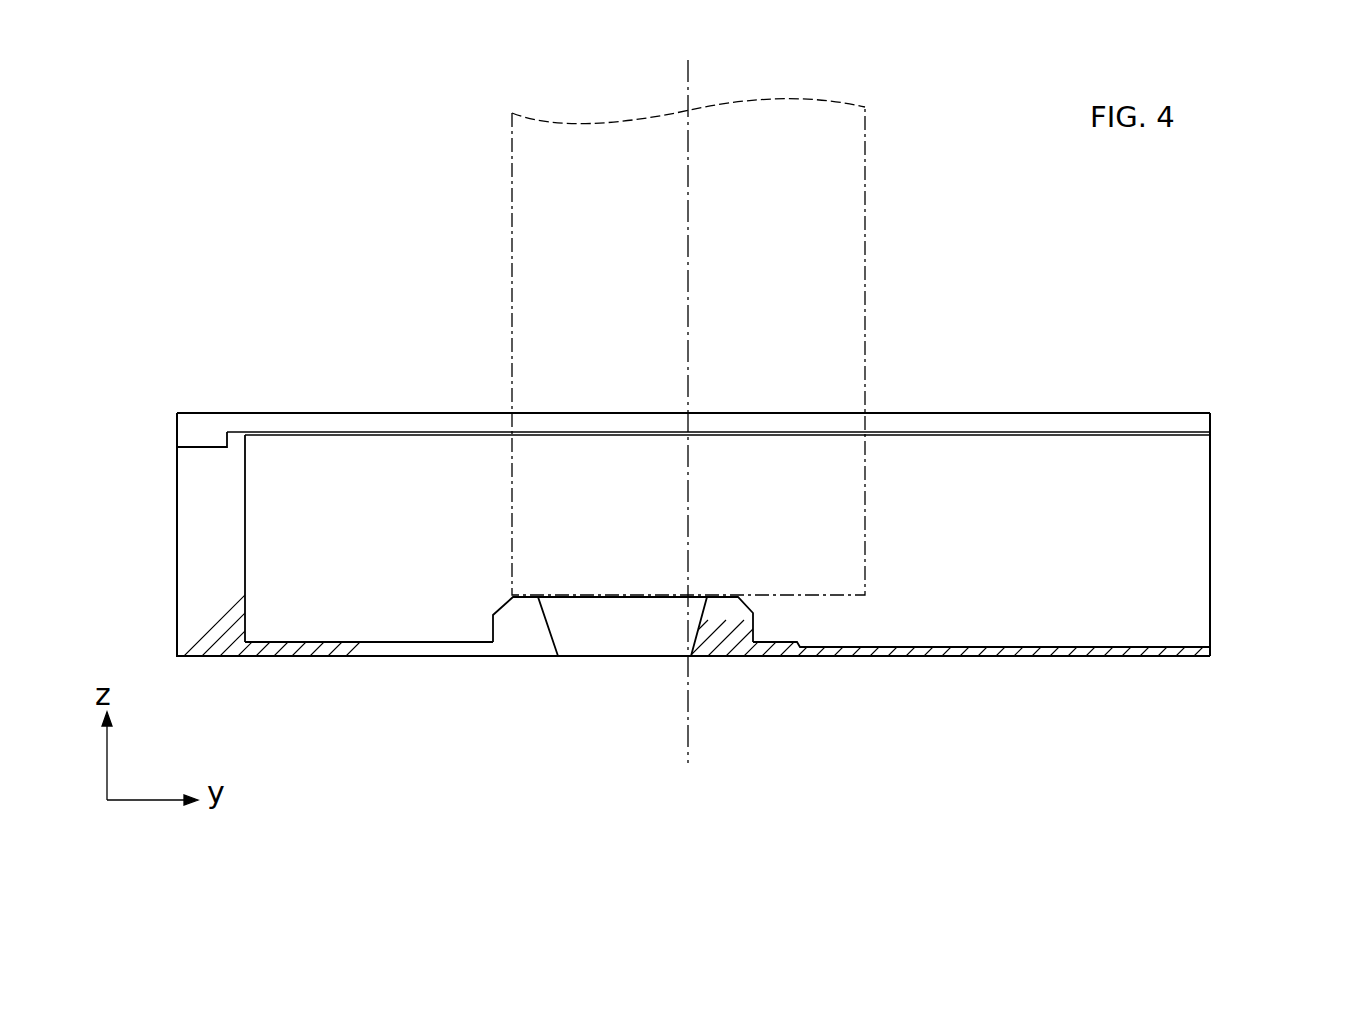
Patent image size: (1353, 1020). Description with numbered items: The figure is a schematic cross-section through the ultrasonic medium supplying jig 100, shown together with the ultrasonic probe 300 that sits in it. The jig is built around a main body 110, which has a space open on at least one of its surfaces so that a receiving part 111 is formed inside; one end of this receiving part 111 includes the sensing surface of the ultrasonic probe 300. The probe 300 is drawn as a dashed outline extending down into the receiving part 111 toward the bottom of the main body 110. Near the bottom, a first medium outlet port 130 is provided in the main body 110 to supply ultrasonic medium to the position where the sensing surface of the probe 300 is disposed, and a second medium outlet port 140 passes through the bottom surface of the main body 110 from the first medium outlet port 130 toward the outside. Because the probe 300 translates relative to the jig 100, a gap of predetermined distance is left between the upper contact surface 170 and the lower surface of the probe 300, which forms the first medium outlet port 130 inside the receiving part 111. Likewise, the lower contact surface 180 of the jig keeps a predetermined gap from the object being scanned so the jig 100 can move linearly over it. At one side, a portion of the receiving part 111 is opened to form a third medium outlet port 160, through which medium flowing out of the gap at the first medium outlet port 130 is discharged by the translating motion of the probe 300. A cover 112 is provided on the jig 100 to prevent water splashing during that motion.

The ultrasonic medium supplying jig 100 is at (265, 366).
The main body 110 is at (212, 610).
The receiving part 111 is at (947, 467).
The cover 112 is at (383, 431).
The first medium outlet port 130 is at (612, 600).
The second medium outlet port 140 is at (612, 657).
The third medium outlet port 160 is at (1212, 532).
The upper contact surface 170 is at (708, 608).
The lower contact surface 180 is at (720, 657).
The ultrasonic probe 300 is at (865, 193).